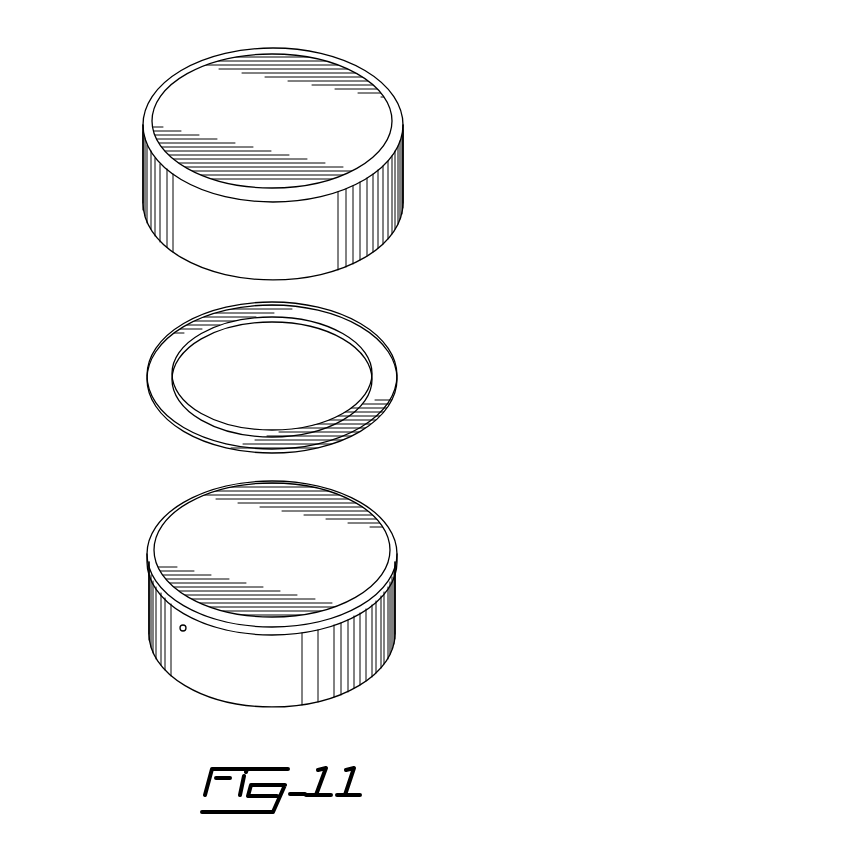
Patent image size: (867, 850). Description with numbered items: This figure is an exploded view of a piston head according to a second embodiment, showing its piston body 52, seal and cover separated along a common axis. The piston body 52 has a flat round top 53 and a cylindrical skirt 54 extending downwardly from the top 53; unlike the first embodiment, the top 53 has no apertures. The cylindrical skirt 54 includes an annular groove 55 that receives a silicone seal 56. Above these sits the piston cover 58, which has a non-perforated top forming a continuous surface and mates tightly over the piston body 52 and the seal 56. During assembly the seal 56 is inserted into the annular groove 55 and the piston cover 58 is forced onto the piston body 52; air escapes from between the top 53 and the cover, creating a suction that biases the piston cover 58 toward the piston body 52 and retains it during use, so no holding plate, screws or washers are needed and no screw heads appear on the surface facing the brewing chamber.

The piston cover 58 is at (398, 84).
The silicone seal 56 is at (390, 334).
The piston body 52 is at (275, 566).
The flat round top 53 is at (247, 518).
The cylindrical skirt 54 is at (380, 623).
The annular groove 55 is at (163, 601).